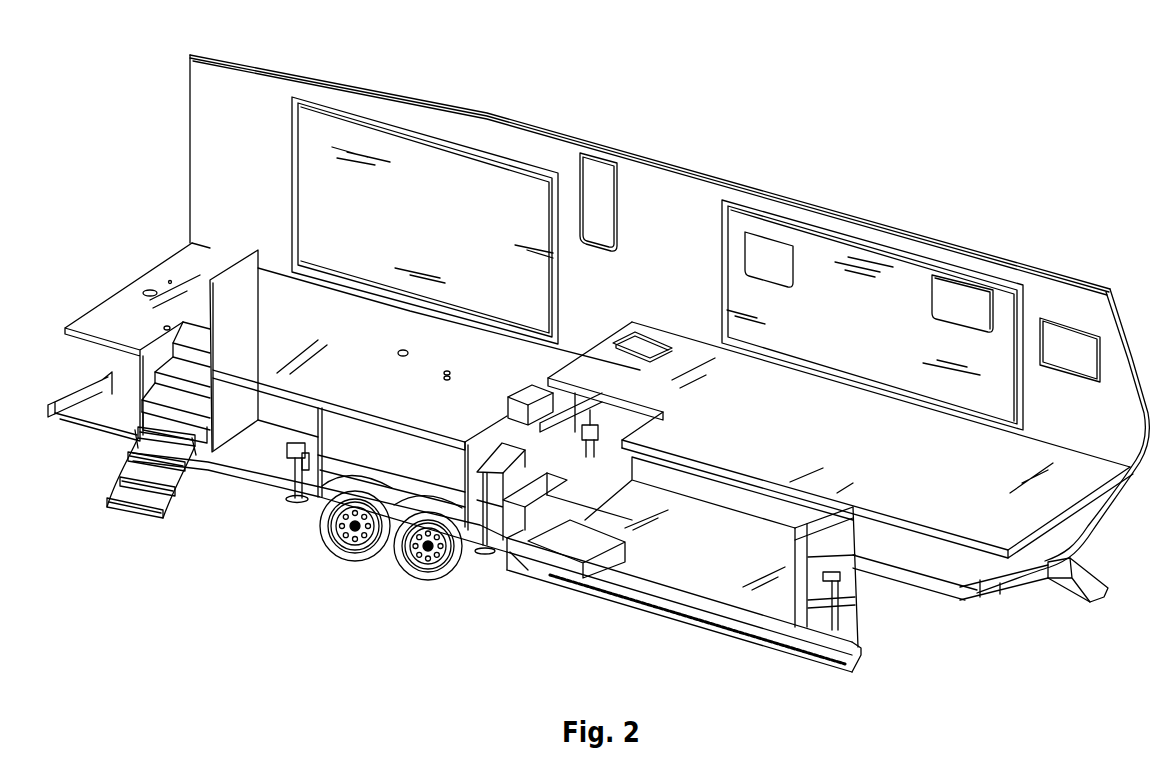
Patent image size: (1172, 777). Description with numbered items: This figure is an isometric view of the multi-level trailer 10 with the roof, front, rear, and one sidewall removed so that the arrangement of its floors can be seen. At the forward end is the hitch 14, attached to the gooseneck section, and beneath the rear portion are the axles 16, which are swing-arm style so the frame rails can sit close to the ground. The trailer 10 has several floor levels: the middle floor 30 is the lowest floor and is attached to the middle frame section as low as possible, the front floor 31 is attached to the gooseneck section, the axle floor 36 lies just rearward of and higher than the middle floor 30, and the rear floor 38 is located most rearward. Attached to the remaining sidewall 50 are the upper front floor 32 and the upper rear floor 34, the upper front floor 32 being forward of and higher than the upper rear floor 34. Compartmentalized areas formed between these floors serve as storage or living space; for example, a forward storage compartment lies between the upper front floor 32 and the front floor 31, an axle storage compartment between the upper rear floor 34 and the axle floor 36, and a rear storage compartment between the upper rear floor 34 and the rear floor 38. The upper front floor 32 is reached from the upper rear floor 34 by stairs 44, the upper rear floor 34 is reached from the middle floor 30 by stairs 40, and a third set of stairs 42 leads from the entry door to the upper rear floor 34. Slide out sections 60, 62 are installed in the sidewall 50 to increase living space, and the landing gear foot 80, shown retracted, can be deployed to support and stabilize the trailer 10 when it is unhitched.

The multi-level trailer 10 is at (768, 101).
The hitch 14 is at (1088, 603).
The axles 16 is at (416, 558).
The middle floor 30 is at (722, 568).
The front floor 31 is at (938, 547).
The upper front floor 32 is at (860, 437).
The upper rear floor 34 is at (377, 372).
The axle floor 36 is at (422, 467).
The rear floor 38 is at (260, 452).
The stairs 40 is at (505, 445).
The stairs 42 is at (172, 370).
The stairs 44 is at (518, 393).
The sidewalls 50 is at (680, 263).
The slide out section 60 is at (437, 228).
The slide out section 62 is at (870, 321).
The foot 80 is at (296, 505).